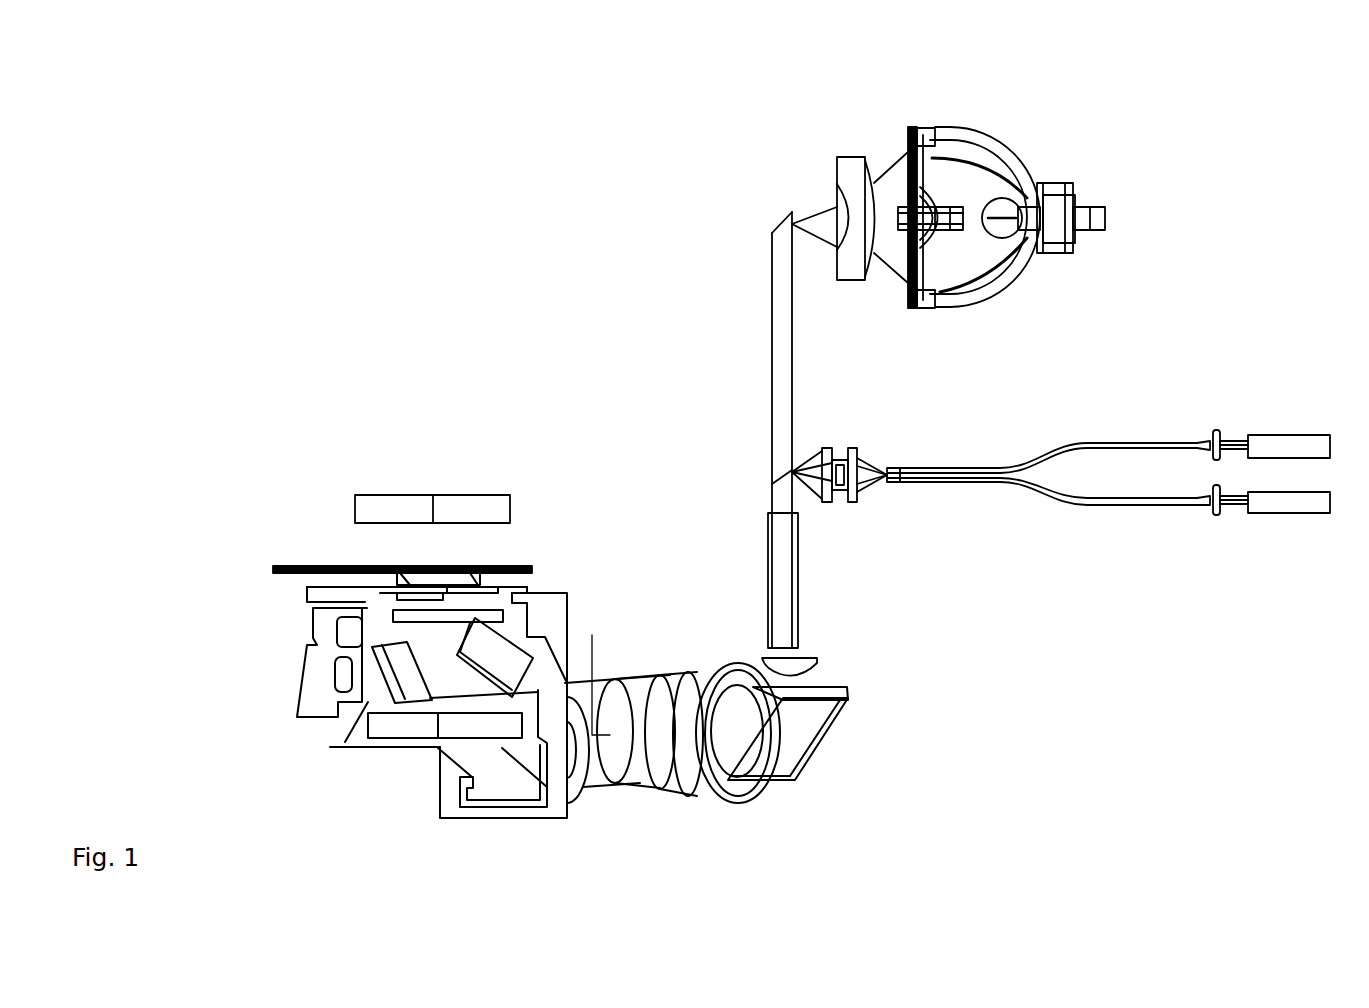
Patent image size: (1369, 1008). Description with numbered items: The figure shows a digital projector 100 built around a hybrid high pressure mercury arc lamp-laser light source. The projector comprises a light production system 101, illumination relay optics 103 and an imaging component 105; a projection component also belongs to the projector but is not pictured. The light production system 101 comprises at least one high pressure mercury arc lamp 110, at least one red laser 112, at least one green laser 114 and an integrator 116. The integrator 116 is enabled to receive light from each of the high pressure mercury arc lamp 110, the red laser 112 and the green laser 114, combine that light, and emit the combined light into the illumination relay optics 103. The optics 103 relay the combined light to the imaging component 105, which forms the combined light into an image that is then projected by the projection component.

The digital projector 100 is at (216, 99).
The light production system 101 is at (744, 113).
The illumination relay optics 103 is at (640, 614).
The imaging component 105 is at (488, 573).
The high pressure mercury arc lamp 110 is at (1037, 141).
The red laser 112 is at (1264, 435).
The green laser 114 is at (1290, 510).
The integrator 116 is at (792, 397).